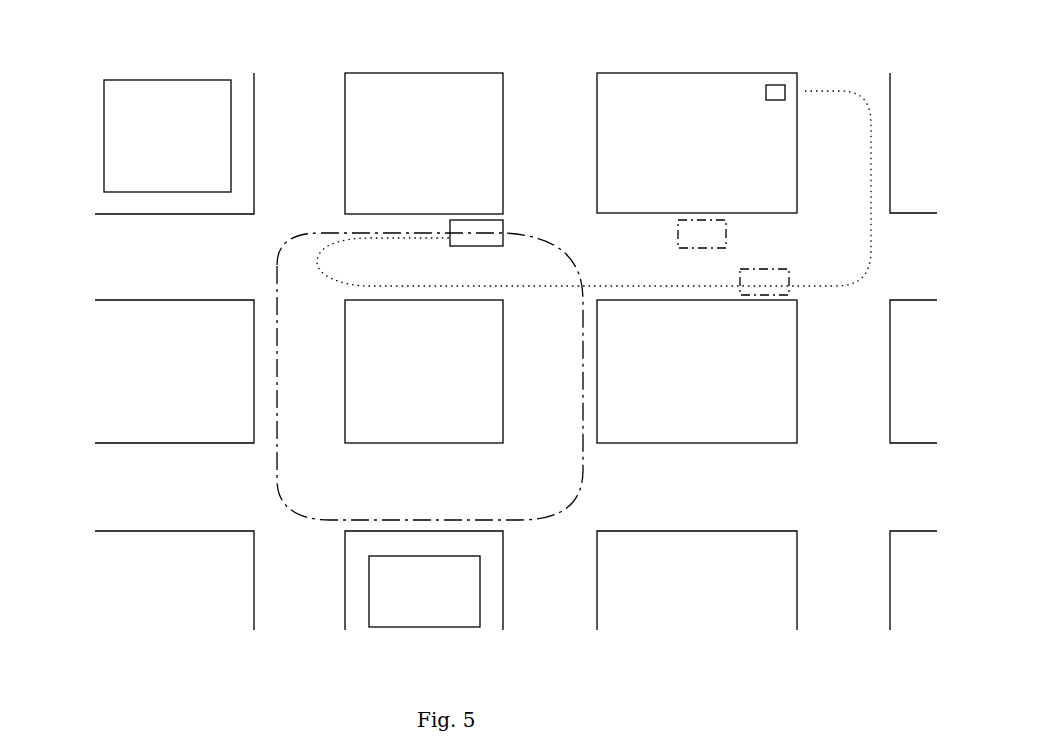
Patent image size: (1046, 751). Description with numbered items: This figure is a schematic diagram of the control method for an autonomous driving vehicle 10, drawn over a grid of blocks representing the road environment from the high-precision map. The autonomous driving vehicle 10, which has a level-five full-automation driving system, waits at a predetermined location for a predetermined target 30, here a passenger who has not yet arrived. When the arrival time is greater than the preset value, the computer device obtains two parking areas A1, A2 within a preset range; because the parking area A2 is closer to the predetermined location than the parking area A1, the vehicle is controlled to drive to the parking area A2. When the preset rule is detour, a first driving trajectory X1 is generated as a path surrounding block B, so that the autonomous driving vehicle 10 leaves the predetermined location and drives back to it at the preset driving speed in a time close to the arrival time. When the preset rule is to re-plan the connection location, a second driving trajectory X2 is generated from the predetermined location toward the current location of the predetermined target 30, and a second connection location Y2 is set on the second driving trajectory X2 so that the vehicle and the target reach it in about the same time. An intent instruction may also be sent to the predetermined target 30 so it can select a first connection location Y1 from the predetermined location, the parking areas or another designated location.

The autonomous driving vehicle 10 is at (475, 233).
The predetermined target 30 is at (776, 93).
The parking area A1 is at (424, 590).
The parking area A2 is at (167, 137).
The block B is at (424, 371).
The first driving trajectory X1 is at (277, 425).
The second driving trajectory X2 is at (877, 213).
The first connection location Y1 is at (704, 236).
The second connection location Y2 is at (765, 281).